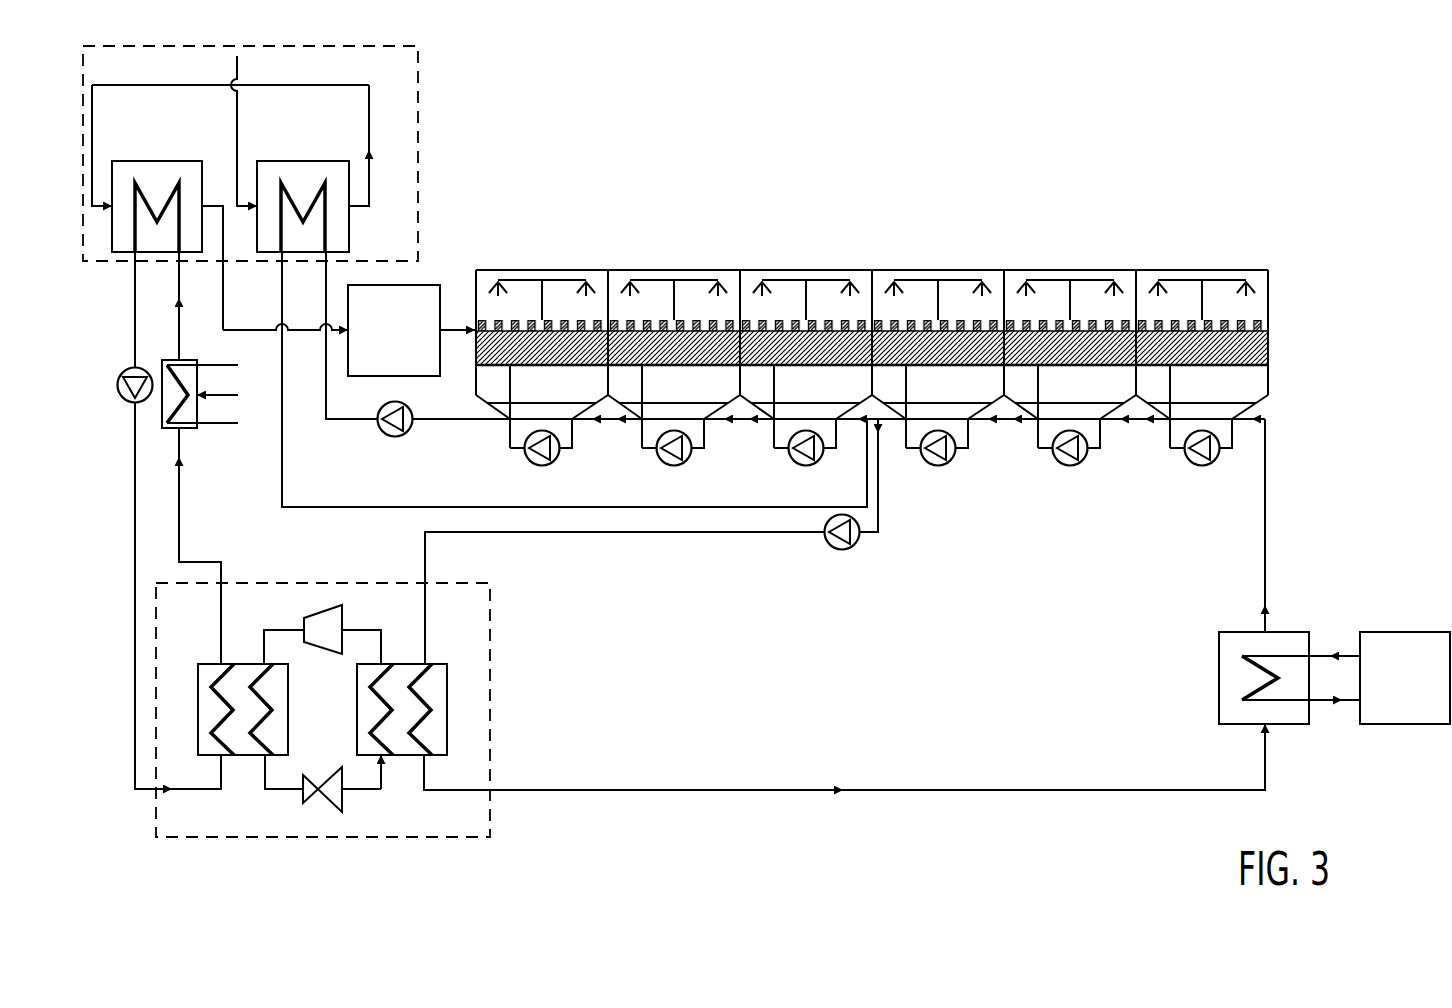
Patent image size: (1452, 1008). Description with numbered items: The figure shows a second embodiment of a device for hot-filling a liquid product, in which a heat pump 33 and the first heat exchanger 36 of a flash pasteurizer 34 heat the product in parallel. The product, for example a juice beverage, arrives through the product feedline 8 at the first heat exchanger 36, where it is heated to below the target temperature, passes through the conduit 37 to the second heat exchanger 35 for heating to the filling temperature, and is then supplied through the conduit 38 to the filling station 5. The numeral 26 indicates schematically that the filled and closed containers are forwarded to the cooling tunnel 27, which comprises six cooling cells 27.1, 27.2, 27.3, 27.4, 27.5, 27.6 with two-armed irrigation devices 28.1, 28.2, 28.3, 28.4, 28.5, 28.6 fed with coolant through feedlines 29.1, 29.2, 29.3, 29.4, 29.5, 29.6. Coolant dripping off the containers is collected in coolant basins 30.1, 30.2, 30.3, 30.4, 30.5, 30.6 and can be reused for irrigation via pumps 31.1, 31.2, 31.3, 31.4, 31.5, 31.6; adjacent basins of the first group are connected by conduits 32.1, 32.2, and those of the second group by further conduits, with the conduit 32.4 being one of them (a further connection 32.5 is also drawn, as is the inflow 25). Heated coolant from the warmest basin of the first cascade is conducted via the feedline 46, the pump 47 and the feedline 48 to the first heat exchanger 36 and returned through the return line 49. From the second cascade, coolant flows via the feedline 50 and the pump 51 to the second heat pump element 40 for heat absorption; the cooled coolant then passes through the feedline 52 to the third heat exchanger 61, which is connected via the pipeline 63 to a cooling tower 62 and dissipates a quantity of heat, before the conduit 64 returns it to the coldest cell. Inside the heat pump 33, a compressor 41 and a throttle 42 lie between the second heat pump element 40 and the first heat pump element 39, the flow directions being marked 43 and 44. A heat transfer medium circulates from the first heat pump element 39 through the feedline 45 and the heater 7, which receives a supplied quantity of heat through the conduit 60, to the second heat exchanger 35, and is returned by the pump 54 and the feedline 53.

The filling station 5 is at (427, 285).
The heater 7 is at (196, 430).
The product feedline 8 is at (238, 62).
The gas inlet flow 25 is at (487, 316).
The container forwarding 26 is at (448, 330).
The cooling tunnel 27 is at (508, 218).
The cooling cell 27.1 is at (528, 269).
The cooling cell 27.2 is at (660, 269).
The cooling cell 27.3 is at (792, 269).
The cooling cell 27.4 is at (924, 269).
The cooling cell 27.5 is at (1056, 269).
The cooling cell 27.6 is at (1188, 269).
The irrigation device 28.1 is at (576, 280).
The irrigation device 28.2 is at (708, 280).
The irrigation device 28.3 is at (840, 280).
The irrigation device 28.4 is at (972, 280).
The irrigation device 28.5 is at (1104, 280).
The irrigation device 28.6 is at (1236, 280).
The feedline 29.1 is at (516, 385).
The feedline 29.2 is at (648, 385).
The feedline 29.3 is at (780, 385).
The feedline 29.4 is at (912, 385).
The feedline 29.5 is at (1044, 385).
The feedline 29.6 is at (1176, 385).
The coolant basin 30.1 is at (522, 425).
The coolant basin 30.2 is at (654, 425).
The coolant basin 30.3 is at (786, 425).
The coolant basin 30.4 is at (918, 425).
The coolant basin 30.5 is at (1050, 425).
The coolant basin 30.6 is at (1182, 425).
The pump 31.1 is at (556, 460).
The pump 31.2 is at (688, 460).
The pump 31.3 is at (820, 460).
The pump 31.4 is at (952, 460).
The pump 31.5 is at (1084, 460).
The pump 31.6 is at (1216, 460).
The conduit 32.1 is at (608, 421).
The conduit 32.2 is at (740, 421).
The conduit 32.4 is at (1004, 421).
The overflow line 32.5 is at (1136, 421).
The heat pump 33 is at (463, 583).
The flash pasteurizer 34 is at (418, 73).
The second heat exchanger 35 is at (155, 161).
The first heat exchanger 36 is at (302, 161).
The conduit 37 is at (370, 130).
The conduit 38 is at (246, 330).
The first heat pump element 39 is at (198, 712).
The second heat pump element 40 is at (447, 712).
The compressor 41 is at (316, 606).
The throttle 42 is at (318, 808).
The direction of flow 43 is at (266, 658).
The direction of flow 44 is at (375, 764).
The feedline 45 is at (181, 480).
The feedline 46 is at (468, 421).
The pump 47 is at (406, 432).
The feedline 48 is at (343, 421).
The return line 49 is at (283, 478).
The feedline 50 is at (879, 520).
The pump 51 is at (856, 546).
The feedline 52 is at (632, 790).
The feedline 53 is at (137, 540).
The pump 54 is at (141, 369).
The conduit 60 is at (198, 361).
The third heat exchanger 61 is at (1292, 632).
The cooling tower 62 is at (1421, 632).
The pipeline 63 is at (1326, 655).
The conduit 64 is at (1266, 558).